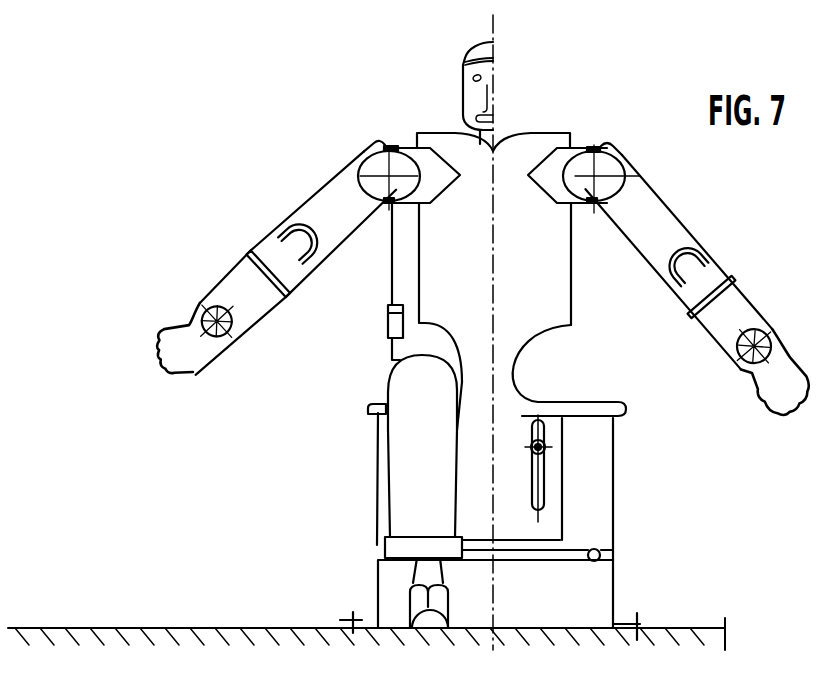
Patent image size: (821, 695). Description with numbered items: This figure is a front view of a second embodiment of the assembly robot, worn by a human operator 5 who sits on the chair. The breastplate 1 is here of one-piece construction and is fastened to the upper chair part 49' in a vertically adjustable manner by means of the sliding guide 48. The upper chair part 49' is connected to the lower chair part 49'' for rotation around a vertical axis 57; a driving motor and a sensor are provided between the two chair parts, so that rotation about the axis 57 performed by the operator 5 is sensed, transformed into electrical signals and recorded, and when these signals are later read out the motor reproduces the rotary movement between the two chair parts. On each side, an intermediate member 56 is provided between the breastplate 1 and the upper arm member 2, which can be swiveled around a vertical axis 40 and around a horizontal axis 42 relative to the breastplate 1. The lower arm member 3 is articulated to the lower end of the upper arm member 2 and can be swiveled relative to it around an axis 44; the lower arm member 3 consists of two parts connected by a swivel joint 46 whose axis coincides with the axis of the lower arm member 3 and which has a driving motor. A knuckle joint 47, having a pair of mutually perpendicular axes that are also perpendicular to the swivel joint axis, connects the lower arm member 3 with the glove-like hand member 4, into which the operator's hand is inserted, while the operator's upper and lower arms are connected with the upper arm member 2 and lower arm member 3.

The breastplate 1 is at (535, 146).
The upper arm member 2 is at (318, 190).
The lower arm member 3 is at (230, 275).
The hand member 4 is at (193, 373).
The human operator 5 is at (462, 93).
The vertical axis 40 is at (390, 148).
The horizontal axis 42 is at (385, 200).
The axis 44 is at (314, 255).
The swivel joint 46 is at (285, 297).
The knuckle joint 47 is at (222, 332).
The sliding guide 48 is at (545, 433).
The upper chair part 49' is at (601, 394).
The lower chair part 49'' is at (532, 591).
The intermediate member 56 is at (373, 163).
The vertical axis 57 is at (495, 366).